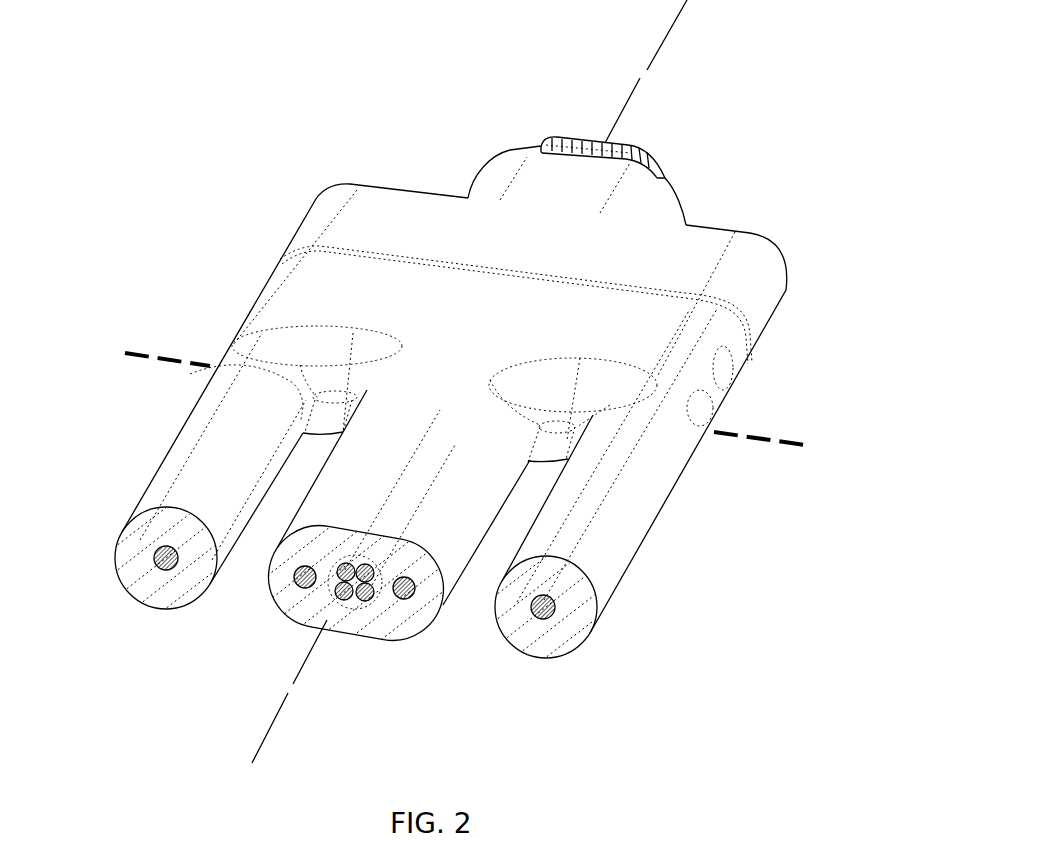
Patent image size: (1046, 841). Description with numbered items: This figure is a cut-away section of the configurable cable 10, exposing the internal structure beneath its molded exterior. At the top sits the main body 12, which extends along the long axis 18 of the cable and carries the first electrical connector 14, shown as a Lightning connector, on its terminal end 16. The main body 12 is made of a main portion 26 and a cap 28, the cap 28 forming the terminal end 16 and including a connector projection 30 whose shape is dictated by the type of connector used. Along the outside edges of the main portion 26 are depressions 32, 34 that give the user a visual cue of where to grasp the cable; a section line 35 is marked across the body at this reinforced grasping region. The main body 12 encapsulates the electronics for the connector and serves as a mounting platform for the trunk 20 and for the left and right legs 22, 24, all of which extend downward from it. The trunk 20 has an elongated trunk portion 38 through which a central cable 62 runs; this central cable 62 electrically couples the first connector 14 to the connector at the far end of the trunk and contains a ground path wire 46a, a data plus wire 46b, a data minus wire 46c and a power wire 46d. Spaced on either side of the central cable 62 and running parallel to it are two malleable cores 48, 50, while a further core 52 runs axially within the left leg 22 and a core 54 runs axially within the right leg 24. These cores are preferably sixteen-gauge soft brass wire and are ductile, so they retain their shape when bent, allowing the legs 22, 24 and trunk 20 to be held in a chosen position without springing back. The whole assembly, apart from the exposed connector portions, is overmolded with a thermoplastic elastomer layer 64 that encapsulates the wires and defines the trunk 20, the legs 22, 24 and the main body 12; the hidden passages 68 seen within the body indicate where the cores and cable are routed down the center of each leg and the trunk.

The configurable cable 10 is at (194, 165).
The main body 12 is at (770, 350).
The first electrical connector 14 is at (592, 140).
The terminal end 16 is at (710, 227).
The long axis 18 is at (666, 39).
The trunk 20 is at (485, 434).
The left leg 22 is at (163, 481).
The right leg 24 is at (610, 537).
The main portion 26 is at (445, 318).
The cap 28 is at (395, 212).
The connector projection 30 is at (491, 179).
The depression 32 is at (700, 447).
The depression 34 is at (733, 388).
The section line 35 is at (170, 358).
The elongated trunk portion 38 is at (447, 513).
The ground path wire 46a is at (364, 564).
The data plus wire 46b is at (352, 566).
The data minus wire 46c is at (340, 598).
The power wire 46d is at (360, 600).
The malleable core 48 is at (297, 576).
The malleable core 50 is at (407, 600).
The malleable core 52 is at (164, 570).
The malleable core 54 is at (537, 620).
The central cable 62 is at (332, 568).
The thermoplastic elastomer layer 64 is at (572, 635).
The passage 68 is at (440, 404).